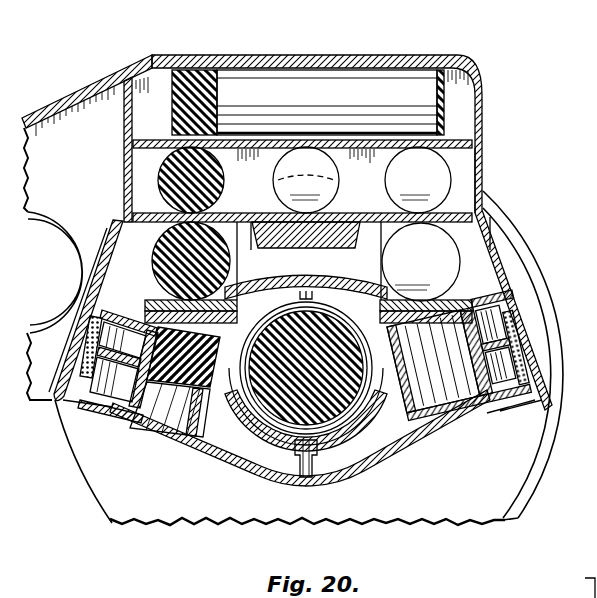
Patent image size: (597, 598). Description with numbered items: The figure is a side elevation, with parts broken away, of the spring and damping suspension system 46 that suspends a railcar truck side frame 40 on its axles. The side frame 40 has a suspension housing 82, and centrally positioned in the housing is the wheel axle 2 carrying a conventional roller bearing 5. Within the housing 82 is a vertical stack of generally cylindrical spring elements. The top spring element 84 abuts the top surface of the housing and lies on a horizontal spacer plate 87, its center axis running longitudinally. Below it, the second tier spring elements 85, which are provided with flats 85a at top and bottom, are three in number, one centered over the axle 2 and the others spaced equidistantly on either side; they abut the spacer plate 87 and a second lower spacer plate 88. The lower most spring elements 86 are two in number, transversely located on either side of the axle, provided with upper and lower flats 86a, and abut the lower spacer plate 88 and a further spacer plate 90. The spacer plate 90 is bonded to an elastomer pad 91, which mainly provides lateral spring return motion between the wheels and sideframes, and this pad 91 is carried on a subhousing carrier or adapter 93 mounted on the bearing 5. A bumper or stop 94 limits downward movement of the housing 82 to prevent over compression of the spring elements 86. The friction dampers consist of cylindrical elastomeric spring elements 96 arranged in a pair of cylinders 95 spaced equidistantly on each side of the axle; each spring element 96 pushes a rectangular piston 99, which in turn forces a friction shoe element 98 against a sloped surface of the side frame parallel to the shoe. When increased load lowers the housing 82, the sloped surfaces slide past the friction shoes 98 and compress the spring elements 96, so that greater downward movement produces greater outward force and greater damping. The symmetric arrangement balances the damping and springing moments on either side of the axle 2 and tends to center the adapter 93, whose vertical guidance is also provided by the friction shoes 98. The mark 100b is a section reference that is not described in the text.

The wheel axle 2 is at (343, 420).
The roller bearing 5 is at (247, 468).
The truck side frame 40 is at (487, 78).
The spring and damping suspension system 46 is at (117, 254).
The suspension housing 82 is at (486, 174).
The top spring element 84 is at (316, 88).
The second tier spring elements 85 is at (428, 190).
The flats 85a is at (440, 135).
The lower most spring elements 86 is at (243, 270).
The flats 86a is at (455, 297).
The horizontal spacer plate 87 is at (393, 133).
The lower spacer plate 88 is at (470, 247).
The spacer plate 90 is at (465, 303).
The elastomer pad 91 is at (500, 327).
The subhousing carrier or adapter 93 is at (433, 435).
The bumper or stop 94 is at (333, 248).
The cylinders 95 is at (137, 417).
The cylindrical elastomeric spring elements 96 is at (172, 410).
The friction shoe element 98 is at (60, 395).
The rectangular piston 99 is at (100, 395).
The section reference 100b is at (571, 584).